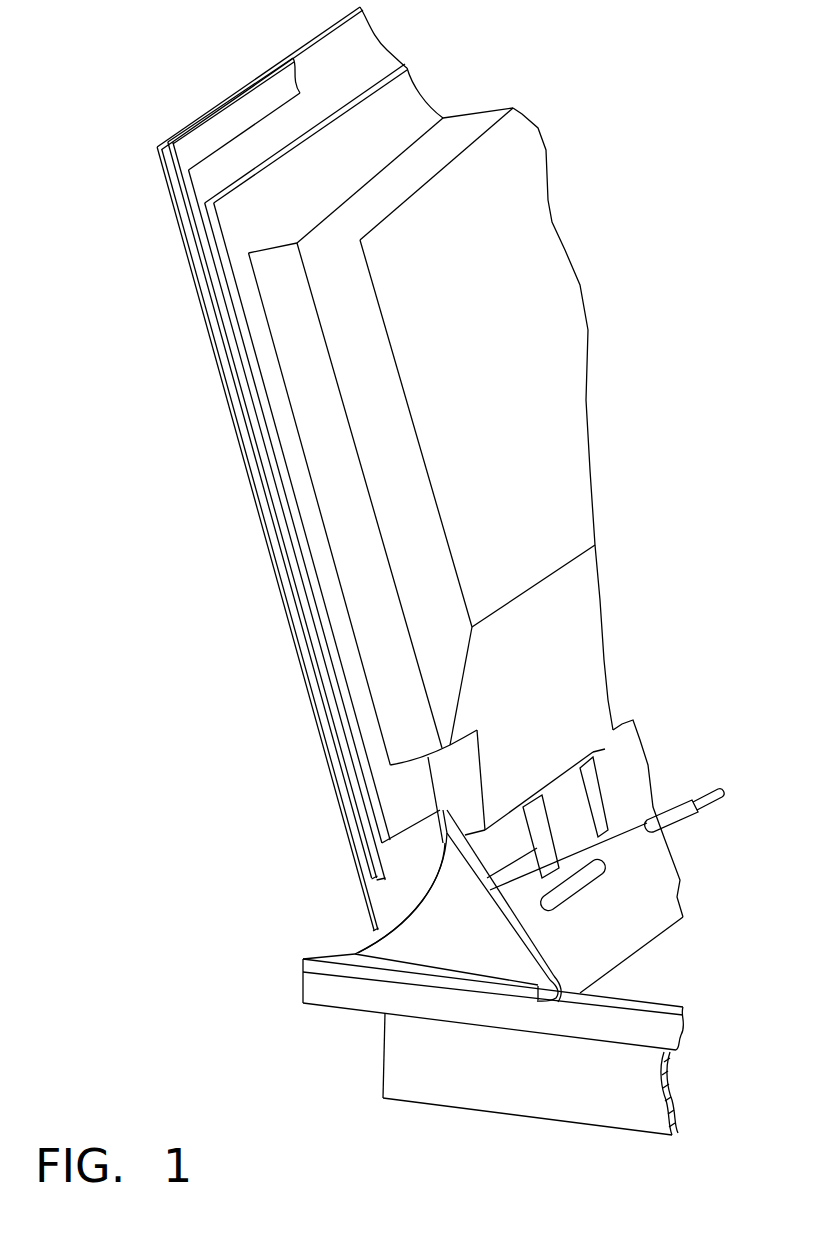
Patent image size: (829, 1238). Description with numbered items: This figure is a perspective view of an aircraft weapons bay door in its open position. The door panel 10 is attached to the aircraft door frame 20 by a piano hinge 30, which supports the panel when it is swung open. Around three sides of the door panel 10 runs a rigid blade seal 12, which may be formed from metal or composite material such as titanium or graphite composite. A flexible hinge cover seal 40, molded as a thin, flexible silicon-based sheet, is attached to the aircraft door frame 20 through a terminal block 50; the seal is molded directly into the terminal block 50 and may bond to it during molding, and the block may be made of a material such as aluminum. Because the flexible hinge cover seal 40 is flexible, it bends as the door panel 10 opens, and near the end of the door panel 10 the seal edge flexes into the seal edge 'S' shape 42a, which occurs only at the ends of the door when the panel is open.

The door panel 10 is at (499, 358).
The rigid blade seal 12 is at (257, 514).
The aircraft door frame 20 is at (542, 1091).
The piano hinge 30 is at (627, 853).
The flexible hinge cover seal 40 is at (474, 948).
The seal edge 'S' shape 42a is at (550, 955).
The terminal block 50 is at (343, 948).